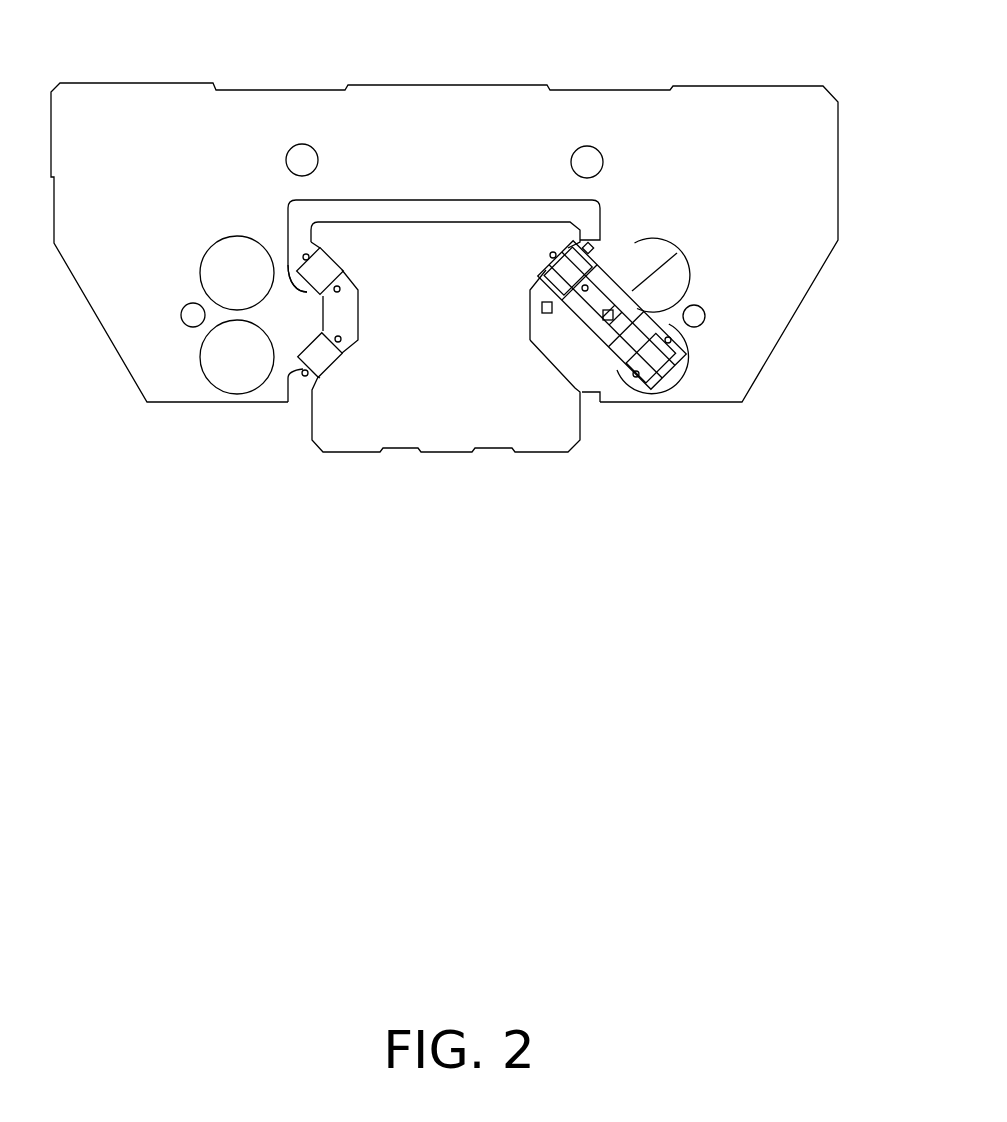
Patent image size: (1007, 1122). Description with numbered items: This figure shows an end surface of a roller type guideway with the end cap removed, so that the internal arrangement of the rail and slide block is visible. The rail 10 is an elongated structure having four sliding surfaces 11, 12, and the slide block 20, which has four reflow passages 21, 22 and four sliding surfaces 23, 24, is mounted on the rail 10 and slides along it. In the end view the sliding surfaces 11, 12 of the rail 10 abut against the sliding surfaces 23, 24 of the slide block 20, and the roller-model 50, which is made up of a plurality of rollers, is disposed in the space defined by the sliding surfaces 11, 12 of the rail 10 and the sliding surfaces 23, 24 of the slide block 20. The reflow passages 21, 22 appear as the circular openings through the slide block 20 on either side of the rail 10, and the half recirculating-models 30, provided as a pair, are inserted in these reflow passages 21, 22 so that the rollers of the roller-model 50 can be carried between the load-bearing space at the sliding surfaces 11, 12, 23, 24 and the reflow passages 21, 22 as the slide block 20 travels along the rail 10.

The rail 10 is at (525, 405).
The sliding surface 11 is at (342, 266).
The sliding surface 12 is at (343, 354).
The slide block 20 is at (750, 125).
The reflow passage 21 is at (230, 260).
The reflow passage 22 is at (220, 357).
The sliding surface 23 is at (305, 345).
The sliding surface 24 is at (278, 290).
The half recirculating-model 30 is at (675, 280).
The roller-model 50 is at (322, 268).